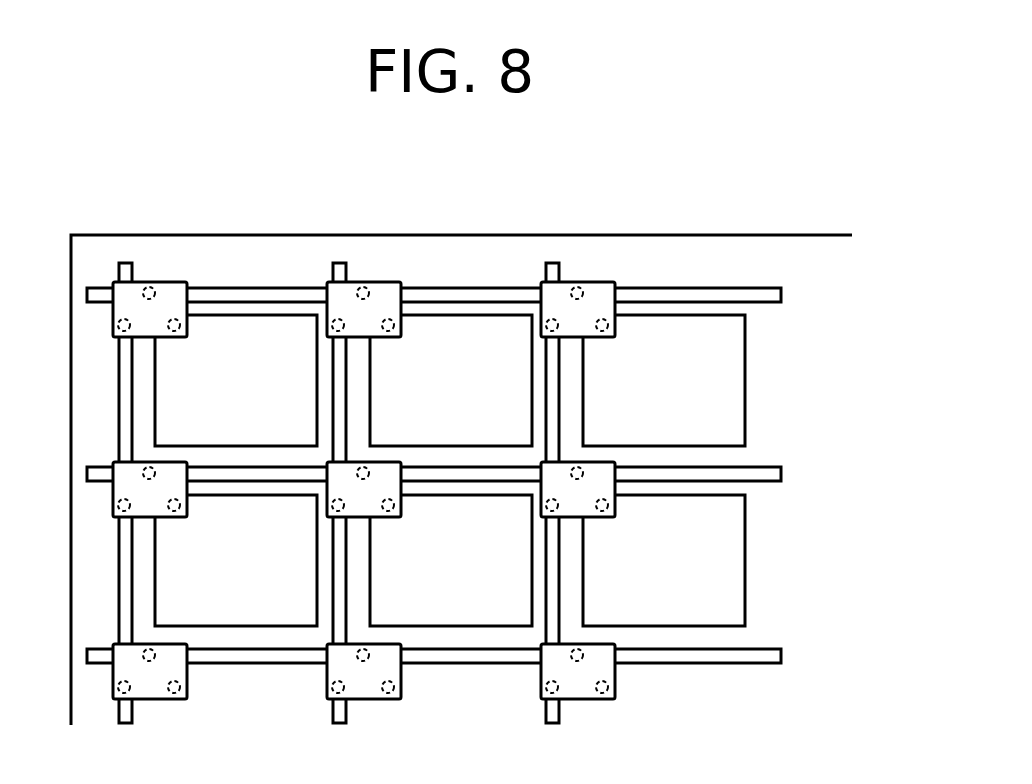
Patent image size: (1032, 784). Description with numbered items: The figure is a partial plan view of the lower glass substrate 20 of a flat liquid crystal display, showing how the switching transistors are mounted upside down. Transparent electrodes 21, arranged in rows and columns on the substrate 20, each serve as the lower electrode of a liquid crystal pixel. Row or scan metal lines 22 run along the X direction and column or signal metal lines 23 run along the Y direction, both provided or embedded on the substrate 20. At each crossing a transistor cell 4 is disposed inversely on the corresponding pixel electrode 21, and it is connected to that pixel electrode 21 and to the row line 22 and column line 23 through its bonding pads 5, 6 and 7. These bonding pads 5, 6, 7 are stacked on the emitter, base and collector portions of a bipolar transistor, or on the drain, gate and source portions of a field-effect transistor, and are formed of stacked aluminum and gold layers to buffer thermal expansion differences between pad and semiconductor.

The transistor cell 4 is at (176, 307).
The bonding pad 5 is at (111, 501).
The bonding pad 6 is at (150, 472).
The bonding pad 7 is at (174, 500).
The lower glass substrate 20 is at (408, 234).
The transparent electrode 21 is at (450, 470).
The row metal line 22 is at (704, 657).
The column metal line 23 is at (546, 714).